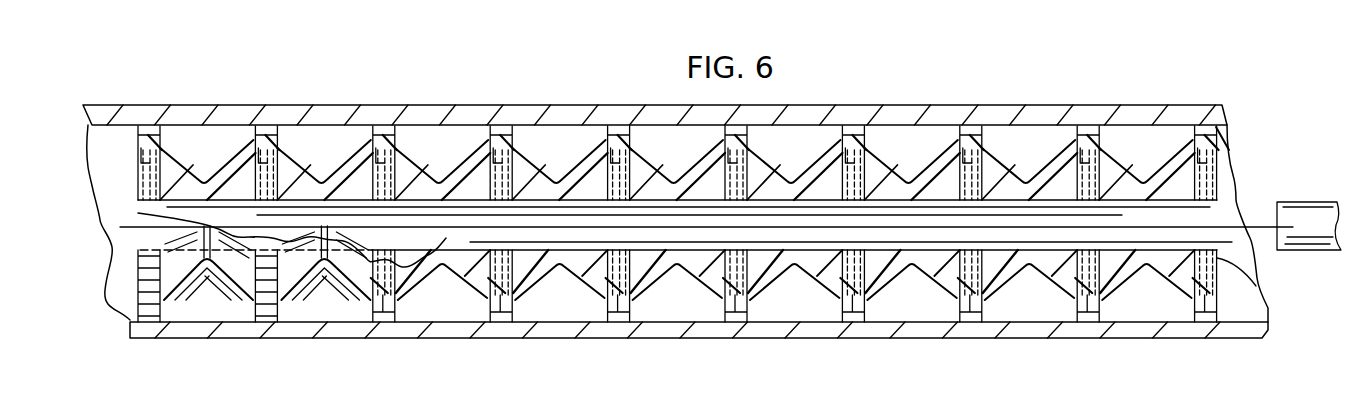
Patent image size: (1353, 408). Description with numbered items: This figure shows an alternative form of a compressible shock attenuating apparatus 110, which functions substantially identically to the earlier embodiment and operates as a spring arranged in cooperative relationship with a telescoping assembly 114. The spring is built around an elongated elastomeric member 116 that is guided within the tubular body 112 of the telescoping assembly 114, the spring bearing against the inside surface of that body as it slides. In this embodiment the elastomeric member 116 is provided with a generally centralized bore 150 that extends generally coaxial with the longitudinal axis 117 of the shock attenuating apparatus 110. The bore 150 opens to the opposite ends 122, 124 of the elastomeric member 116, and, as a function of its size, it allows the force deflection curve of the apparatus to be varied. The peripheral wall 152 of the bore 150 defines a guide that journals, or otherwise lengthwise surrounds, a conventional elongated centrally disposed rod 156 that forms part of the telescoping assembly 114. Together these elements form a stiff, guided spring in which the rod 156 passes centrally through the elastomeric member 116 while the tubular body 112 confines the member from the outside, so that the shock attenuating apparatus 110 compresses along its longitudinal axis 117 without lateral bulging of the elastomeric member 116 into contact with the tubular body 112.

The shock attenuating apparatus 110 is at (1047, 94).
The tubular body 112 is at (196, 110).
The telescoping assembly 114 is at (1214, 94).
The elastomeric member 116 is at (928, 288).
The longitudinal axis 117 is at (298, 226).
The end of the elastomeric member 122 is at (138, 276).
The end of the elastomeric member 124 is at (1258, 284).
The bore 150 is at (584, 213).
The peripheral wall 152 is at (453, 240).
The rod 156 is at (1305, 213).